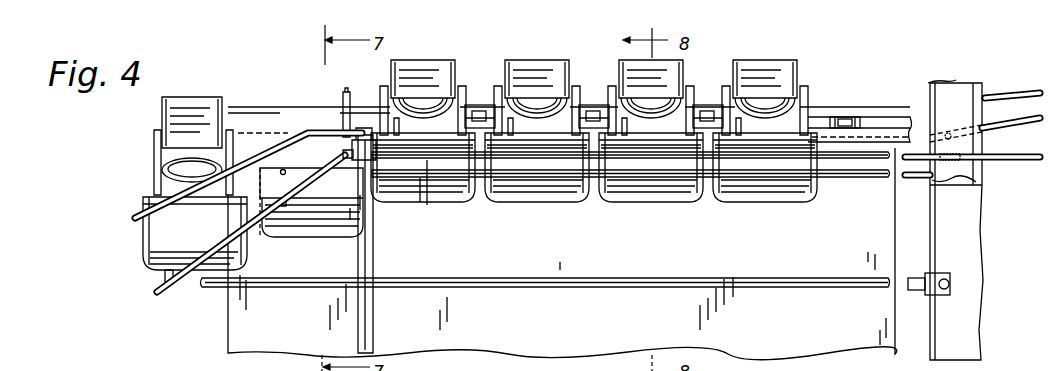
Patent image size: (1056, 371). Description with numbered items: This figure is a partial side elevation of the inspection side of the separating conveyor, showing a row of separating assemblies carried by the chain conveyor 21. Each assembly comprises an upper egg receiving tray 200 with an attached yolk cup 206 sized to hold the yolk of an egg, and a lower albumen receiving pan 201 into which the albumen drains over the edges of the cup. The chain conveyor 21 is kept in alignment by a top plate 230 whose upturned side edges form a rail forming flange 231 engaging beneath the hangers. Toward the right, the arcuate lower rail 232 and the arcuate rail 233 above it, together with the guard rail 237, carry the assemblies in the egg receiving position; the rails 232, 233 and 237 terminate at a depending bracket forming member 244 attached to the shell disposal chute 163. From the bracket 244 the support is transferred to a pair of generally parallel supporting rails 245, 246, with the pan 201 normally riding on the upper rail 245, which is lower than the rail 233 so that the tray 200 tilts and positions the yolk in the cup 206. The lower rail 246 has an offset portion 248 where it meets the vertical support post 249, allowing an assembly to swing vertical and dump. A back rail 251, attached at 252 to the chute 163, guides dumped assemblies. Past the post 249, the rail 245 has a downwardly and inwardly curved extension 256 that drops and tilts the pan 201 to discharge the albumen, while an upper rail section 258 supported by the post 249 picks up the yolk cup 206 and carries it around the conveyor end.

The upper egg receiving tray 200 is at (160, 106).
The yolk cup 206 is at (162, 168).
The lower albumen receiving pan 201 is at (160, 243).
The chain conveyor 21 is at (845, 117).
The shell disposal chute 163 is at (972, 249).
The top plate 230 is at (881, 142).
The rail forming flange 231 is at (366, 118).
The arcuate lower rail 232 is at (1003, 163).
The arcuate rail 233 is at (1008, 118).
The guard rail 237 is at (1000, 96).
The depending bracket forming member 244 is at (935, 88).
The upper supporting rail 245 is at (797, 160).
The lower supporting rail 246 is at (808, 177).
The offset portion 248 is at (423, 180).
The vertical support post 249 is at (358, 250).
The back rail 251 is at (606, 278).
The attachment point of back rail 252 is at (946, 292).
The downwardly and inwardly curved extension 256 is at (184, 284).
The upper rail section 258 is at (318, 137).